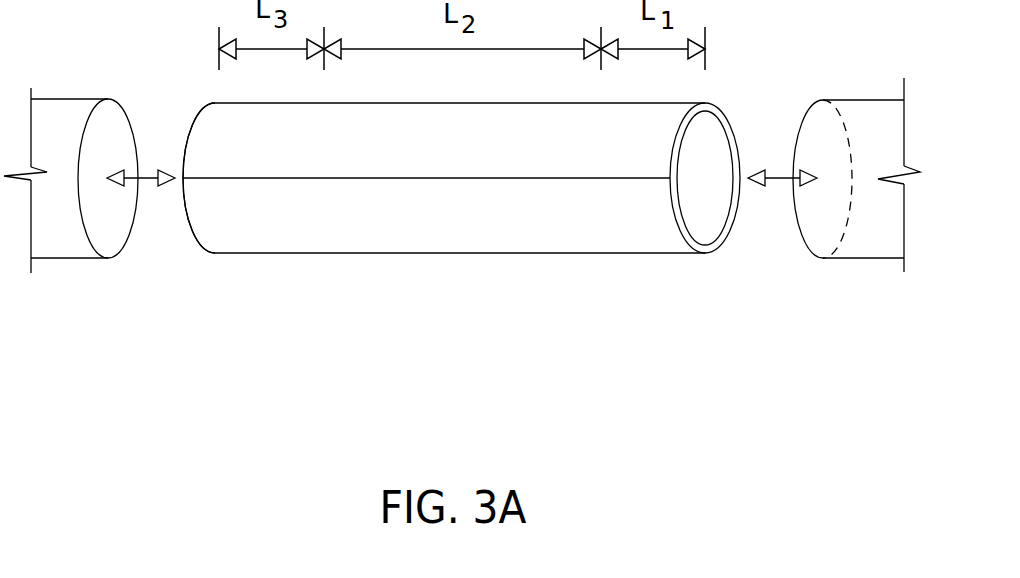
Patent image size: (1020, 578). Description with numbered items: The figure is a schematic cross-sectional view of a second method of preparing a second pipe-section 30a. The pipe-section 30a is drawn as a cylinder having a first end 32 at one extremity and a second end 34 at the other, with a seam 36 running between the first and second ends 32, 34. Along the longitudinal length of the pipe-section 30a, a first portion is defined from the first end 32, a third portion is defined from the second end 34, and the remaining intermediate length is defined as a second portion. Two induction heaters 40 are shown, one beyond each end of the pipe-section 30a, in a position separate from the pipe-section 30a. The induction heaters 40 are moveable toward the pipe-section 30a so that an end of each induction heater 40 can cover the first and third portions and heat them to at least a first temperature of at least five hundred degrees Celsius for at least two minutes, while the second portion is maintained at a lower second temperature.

The second pipe-section 30a is at (520, 309).
The first end 32 is at (720, 245).
The second end 34 is at (192, 225).
The seam 36 is at (278, 178).
The induction heater 40 is at (60, 118).